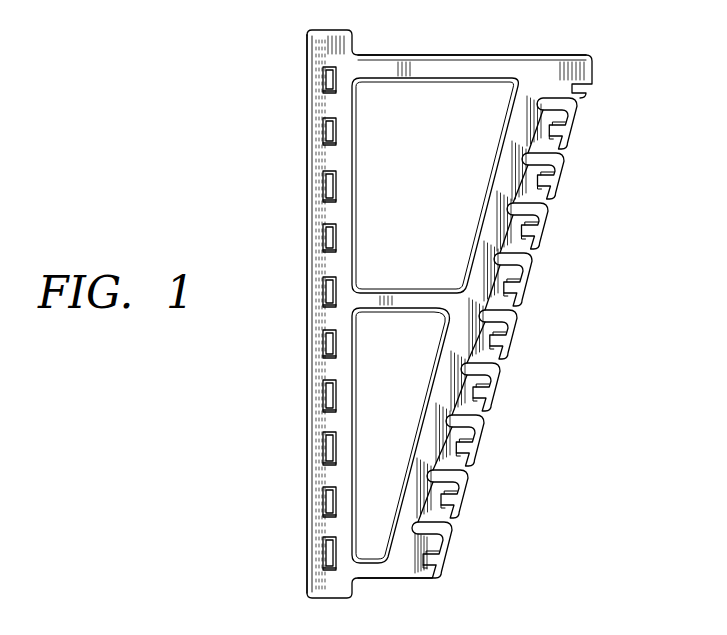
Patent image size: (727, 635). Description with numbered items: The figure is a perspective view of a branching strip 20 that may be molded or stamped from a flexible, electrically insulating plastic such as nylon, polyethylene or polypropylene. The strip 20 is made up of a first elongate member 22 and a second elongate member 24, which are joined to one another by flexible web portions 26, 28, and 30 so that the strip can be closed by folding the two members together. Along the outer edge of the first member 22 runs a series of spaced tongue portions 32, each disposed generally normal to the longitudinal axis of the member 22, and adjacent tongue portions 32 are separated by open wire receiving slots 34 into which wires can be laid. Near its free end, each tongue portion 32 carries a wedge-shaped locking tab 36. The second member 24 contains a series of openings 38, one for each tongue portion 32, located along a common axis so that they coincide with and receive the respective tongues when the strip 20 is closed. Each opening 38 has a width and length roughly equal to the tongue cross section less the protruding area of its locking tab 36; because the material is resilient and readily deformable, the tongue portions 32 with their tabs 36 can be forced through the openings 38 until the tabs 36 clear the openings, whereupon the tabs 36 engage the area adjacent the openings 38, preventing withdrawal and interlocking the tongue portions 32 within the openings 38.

The branching strip 20 is at (614, 316).
The first elongate member 22 is at (501, 427).
The second elongate member 24 is at (303, 328).
The flexible web portion 26 is at (474, 55).
The flexible web portion 28 is at (356, 290).
The flexible web portion 30 is at (368, 580).
The tongue portions 32 is at (566, 150).
The wire receiving slots 34 is at (458, 480).
The locking tab 36 is at (585, 98).
The openings 38 is at (326, 232).